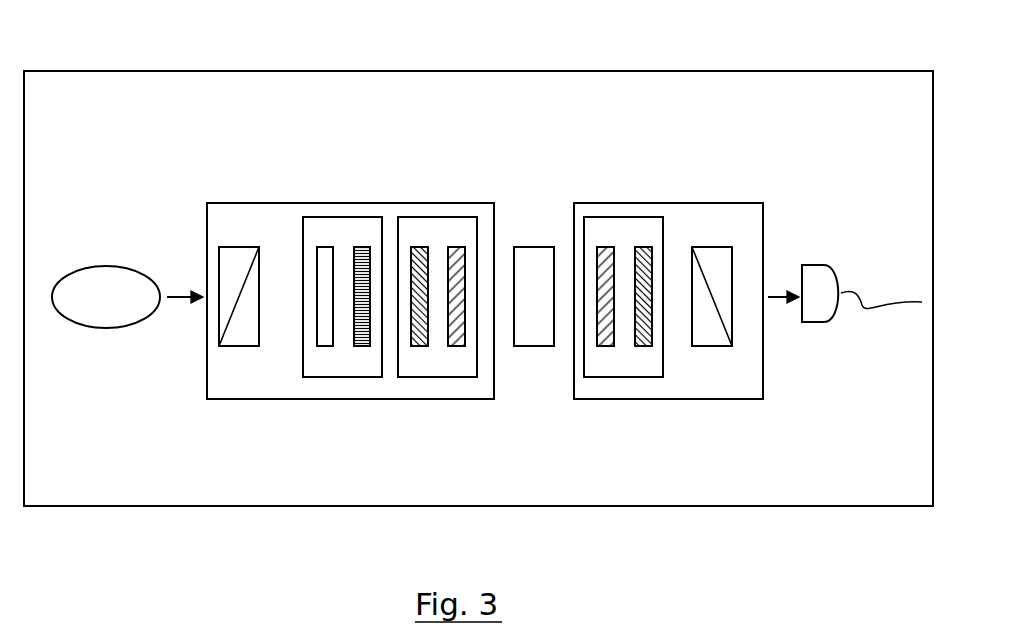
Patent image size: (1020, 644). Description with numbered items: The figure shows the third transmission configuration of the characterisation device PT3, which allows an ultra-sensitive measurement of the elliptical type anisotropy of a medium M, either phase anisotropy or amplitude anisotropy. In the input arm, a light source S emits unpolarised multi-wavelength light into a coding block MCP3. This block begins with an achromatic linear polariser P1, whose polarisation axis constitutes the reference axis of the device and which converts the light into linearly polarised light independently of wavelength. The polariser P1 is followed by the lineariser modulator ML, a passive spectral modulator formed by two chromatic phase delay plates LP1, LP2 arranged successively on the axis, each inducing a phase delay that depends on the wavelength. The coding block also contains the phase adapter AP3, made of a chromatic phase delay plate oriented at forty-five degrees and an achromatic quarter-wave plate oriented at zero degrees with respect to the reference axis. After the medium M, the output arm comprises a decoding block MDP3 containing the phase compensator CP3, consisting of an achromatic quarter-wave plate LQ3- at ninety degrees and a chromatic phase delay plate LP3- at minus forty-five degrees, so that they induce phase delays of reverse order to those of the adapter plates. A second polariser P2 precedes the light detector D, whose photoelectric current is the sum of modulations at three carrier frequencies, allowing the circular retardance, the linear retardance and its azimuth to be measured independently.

The characterisation device PT3 is at (95, 113).
The light source S is at (106, 329).
The modulation and compensation unit (input side) MCP3 is at (217, 400).
The achromatic linear polariser P1 is at (230, 247).
The lineariser modulator ML is at (355, 217).
The phase delay plate LP1 is at (325, 347).
The phase delay plate LP2 is at (362, 347).
The phase adapter AP3 is at (458, 217).
The medium M is at (534, 347).
The demodulation unit (output side) MDP3 is at (583, 400).
The phase compensator CP3 is at (643, 216).
The achromatic quarter-wave plate LQ3- is at (605, 347).
The chromatic phase delay plate LP3- is at (643, 347).
The second polarizer P2 is at (712, 247).
The light detector D is at (825, 323).